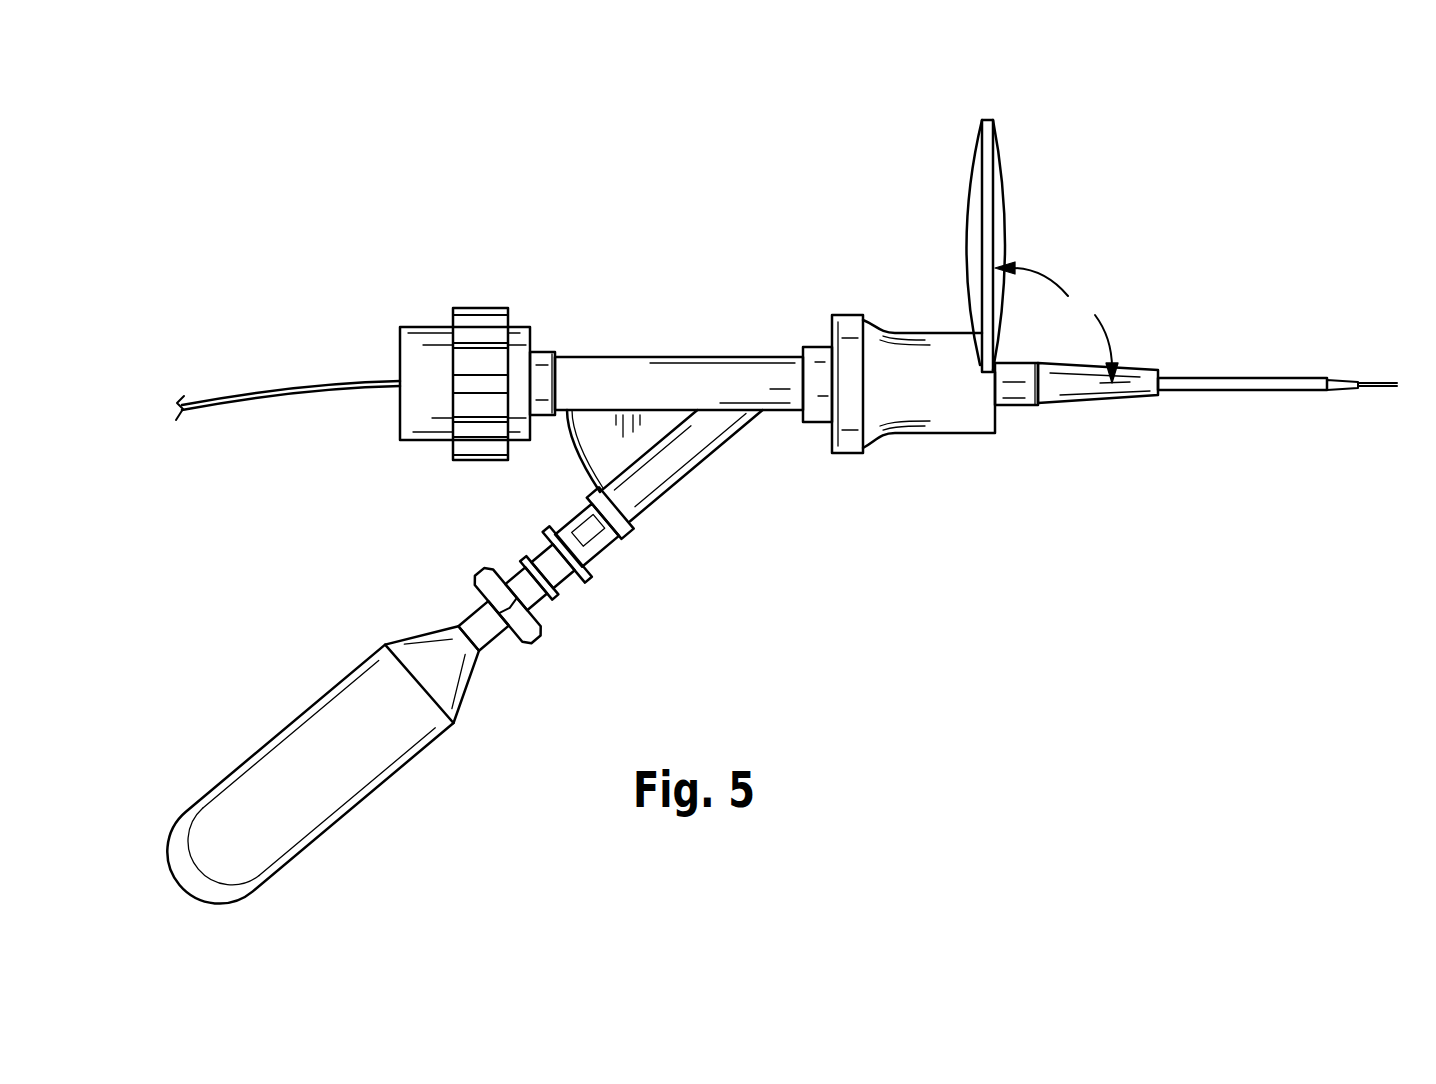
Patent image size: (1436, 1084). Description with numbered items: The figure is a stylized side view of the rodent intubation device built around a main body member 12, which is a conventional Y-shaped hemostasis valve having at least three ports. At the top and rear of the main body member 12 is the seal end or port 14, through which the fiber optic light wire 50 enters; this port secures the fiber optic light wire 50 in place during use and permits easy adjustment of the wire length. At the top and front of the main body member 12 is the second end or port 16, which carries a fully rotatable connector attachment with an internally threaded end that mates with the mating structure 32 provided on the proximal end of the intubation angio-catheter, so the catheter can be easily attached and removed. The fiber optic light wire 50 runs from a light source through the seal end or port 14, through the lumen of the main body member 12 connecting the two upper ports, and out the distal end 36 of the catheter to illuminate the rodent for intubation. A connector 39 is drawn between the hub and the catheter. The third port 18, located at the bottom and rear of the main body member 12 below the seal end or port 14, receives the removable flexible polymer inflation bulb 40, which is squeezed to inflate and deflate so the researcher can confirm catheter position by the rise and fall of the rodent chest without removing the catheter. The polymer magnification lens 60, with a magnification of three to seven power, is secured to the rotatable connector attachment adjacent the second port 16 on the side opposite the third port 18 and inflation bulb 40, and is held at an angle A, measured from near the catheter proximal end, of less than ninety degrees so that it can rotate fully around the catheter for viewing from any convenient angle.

The main body member 12 is at (832, 598).
The seal end or port 14 is at (503, 273).
The second end or port 16 is at (843, 283).
The third port, open end or port 18 is at (618, 608).
The mating structure 32 is at (973, 468).
The distal end 36 is at (1345, 378).
The needle connector 39 is at (1046, 430).
The flexible polymer inflation bulb 40 is at (373, 866).
The fiber optic light wire 50 is at (258, 352).
The polymer magnification lens 60 is at (1015, 118).
The angle A is at (1056, 322).